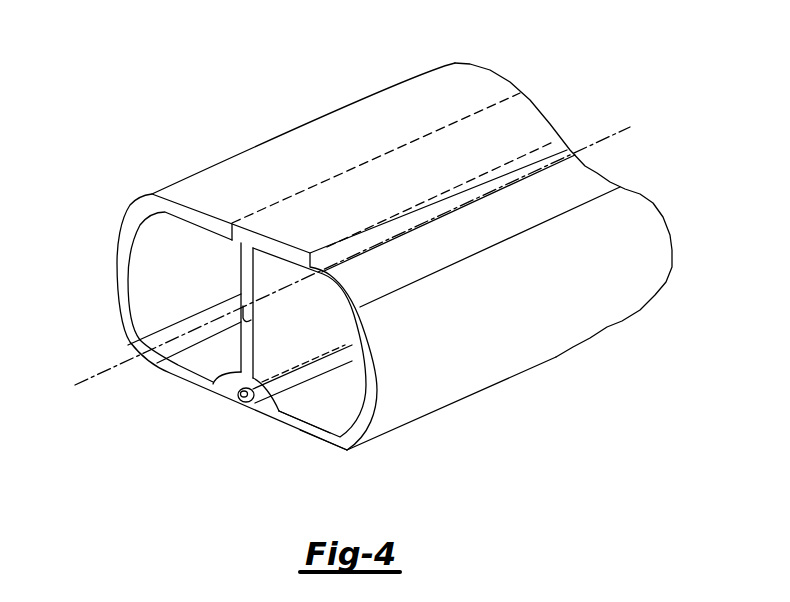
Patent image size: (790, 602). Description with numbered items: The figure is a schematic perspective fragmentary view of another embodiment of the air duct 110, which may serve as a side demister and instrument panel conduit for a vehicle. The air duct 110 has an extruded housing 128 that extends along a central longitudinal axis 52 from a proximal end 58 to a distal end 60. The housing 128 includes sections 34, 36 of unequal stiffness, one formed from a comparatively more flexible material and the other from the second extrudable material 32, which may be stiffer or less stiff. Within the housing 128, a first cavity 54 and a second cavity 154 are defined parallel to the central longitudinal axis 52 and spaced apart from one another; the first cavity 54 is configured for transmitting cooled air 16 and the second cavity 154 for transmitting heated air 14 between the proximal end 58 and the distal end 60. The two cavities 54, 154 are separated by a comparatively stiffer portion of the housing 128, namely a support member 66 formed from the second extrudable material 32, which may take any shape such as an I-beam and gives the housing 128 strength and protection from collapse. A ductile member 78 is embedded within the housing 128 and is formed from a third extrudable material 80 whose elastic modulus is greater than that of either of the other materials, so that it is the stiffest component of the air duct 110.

The air duct 110 is at (138, 98).
The housing 128 is at (292, 102).
The distal end 60 is at (652, 337).
The section of the housing 36 is at (402, 178).
The central longitudinal axis 52 is at (608, 138).
The section of the housing 34 is at (100, 268).
The first cavity 54 is at (154, 298).
The support member 66 is at (238, 277).
The second extrudable material 32 is at (250, 319).
The cooled air 16 is at (240, 343).
The ductile member 78 is at (242, 418).
The heated air 14 is at (308, 410).
The third extrudable material 80 is at (303, 366).
The second cavity 154 is at (342, 418).
The proximal end 58 is at (353, 457).